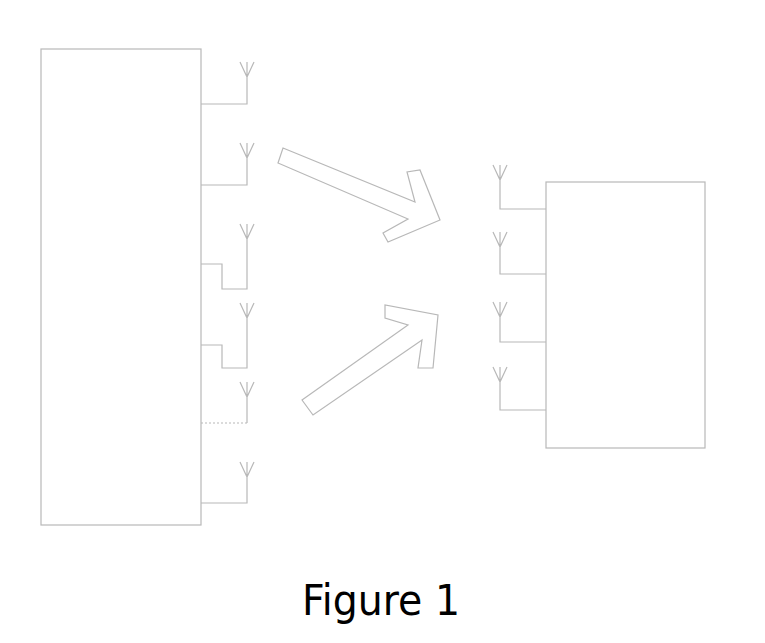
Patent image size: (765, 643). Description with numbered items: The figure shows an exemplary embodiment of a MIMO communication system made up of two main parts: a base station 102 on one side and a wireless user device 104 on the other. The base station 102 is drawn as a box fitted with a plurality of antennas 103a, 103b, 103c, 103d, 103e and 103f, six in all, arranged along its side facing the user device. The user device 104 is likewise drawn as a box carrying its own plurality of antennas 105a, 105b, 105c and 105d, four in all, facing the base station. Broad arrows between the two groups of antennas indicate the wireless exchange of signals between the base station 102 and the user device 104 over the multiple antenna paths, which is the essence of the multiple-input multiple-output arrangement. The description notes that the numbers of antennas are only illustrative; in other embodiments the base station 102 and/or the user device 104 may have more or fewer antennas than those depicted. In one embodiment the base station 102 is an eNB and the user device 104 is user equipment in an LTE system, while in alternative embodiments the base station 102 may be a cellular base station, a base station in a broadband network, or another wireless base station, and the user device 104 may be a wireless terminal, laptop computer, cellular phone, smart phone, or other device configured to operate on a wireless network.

The base station 102 is at (66, 49).
The wireless user device 104 is at (576, 182).
The antenna 103a is at (264, 104).
The antenna 103b is at (258, 165).
The antenna 103c is at (255, 283).
The antenna 103d is at (255, 358).
The antenna 103e is at (262, 403).
The antenna 103f is at (257, 492).
The antenna 105a is at (507, 197).
The antenna 105b is at (490, 268).
The antenna 105c is at (479, 308).
The antenna 105d is at (488, 398).